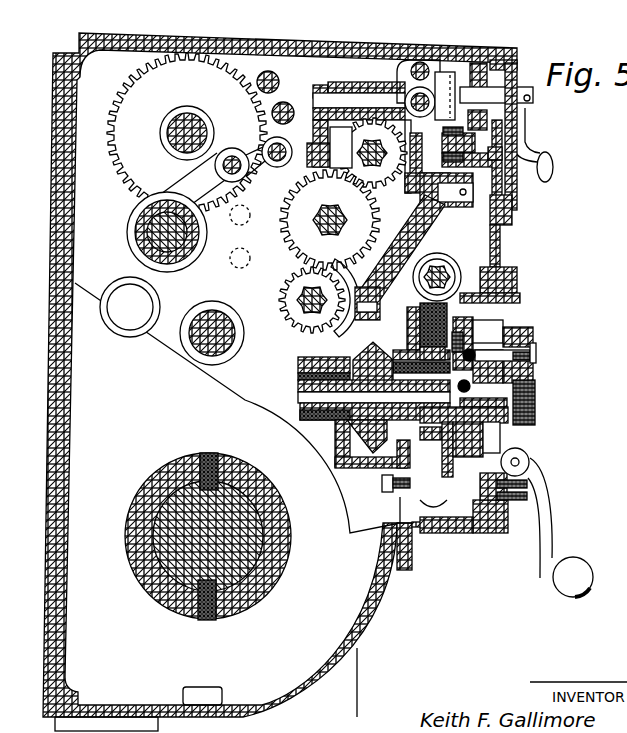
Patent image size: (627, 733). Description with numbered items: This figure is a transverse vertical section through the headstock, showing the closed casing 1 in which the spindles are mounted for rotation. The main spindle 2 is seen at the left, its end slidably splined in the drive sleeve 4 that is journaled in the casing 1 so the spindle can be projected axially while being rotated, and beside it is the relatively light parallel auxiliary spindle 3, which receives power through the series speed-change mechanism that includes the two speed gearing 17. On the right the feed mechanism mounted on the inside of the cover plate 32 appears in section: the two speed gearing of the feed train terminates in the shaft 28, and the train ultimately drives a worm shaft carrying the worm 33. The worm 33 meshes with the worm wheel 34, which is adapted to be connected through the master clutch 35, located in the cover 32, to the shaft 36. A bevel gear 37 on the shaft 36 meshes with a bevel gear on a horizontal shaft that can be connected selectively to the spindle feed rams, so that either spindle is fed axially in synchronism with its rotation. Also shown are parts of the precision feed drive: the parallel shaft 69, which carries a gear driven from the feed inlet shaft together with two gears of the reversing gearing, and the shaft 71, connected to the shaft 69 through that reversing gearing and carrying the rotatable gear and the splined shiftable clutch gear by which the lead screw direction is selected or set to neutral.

The casing 1 is at (374, 603).
The main spindle 2 is at (257, 536).
The auxiliary spindle 3 is at (199, 315).
The drive sleeve 4 is at (255, 481).
The two speed gearing 17 is at (121, 185).
The shaft 28 is at (358, 152).
The cover plate 32 is at (501, 252).
The worm 33 is at (449, 266).
The worm wheel 34 is at (420, 306).
The master clutch 35 is at (537, 349).
The shaft 36 is at (300, 385).
The bevel gear 37 is at (372, 355).
The shaft 69 is at (336, 212).
The shaft 71 is at (302, 288).